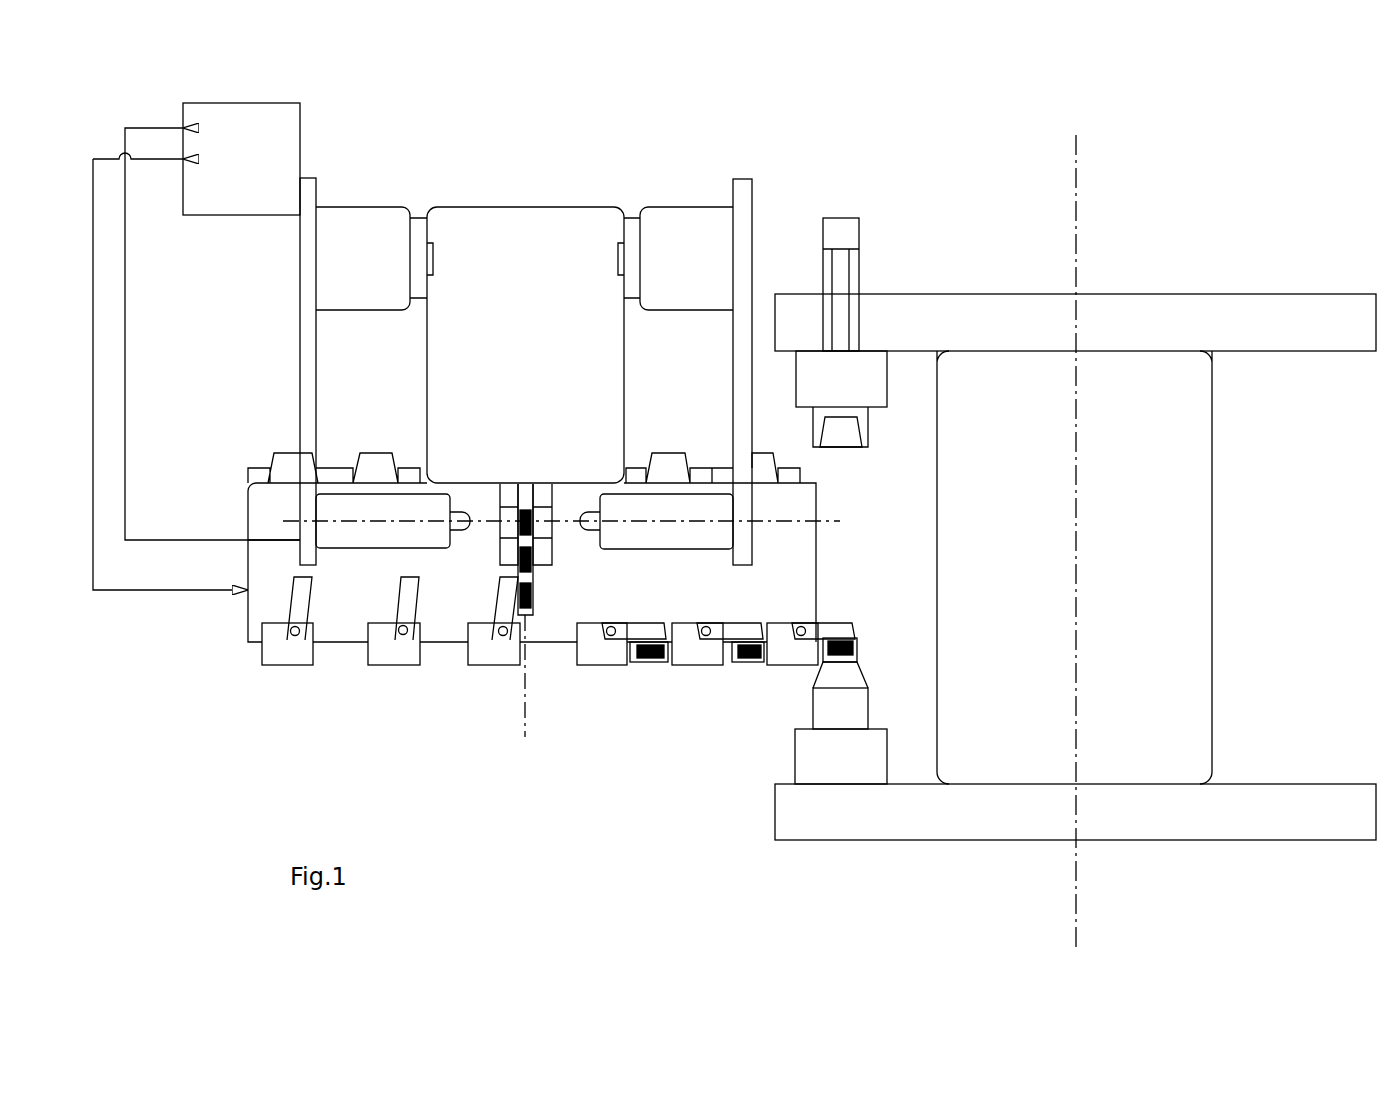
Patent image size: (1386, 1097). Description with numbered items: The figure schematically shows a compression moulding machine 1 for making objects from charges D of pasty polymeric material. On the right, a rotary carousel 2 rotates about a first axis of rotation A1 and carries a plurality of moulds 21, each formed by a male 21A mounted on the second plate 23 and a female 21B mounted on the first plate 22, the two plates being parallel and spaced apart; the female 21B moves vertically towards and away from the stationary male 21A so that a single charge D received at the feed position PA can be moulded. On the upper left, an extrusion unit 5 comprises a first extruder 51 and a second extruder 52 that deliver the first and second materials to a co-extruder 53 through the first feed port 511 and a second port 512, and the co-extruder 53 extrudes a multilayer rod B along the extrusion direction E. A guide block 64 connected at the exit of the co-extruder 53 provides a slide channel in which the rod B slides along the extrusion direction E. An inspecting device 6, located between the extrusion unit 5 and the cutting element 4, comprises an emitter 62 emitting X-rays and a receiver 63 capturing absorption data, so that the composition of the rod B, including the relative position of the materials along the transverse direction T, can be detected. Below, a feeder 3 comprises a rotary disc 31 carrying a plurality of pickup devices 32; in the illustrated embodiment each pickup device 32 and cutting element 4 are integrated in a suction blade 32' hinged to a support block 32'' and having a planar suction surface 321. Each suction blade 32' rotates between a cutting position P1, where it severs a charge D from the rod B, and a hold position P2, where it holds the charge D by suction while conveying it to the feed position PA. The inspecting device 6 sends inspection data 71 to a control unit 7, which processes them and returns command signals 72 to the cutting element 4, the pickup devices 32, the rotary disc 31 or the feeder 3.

The moulding machine 1 is at (1075, 538).
The rotary carousel 2 is at (1075, 504).
The feeder 3 is at (557, 701).
The cutting element 4 is at (497, 600).
The extrusion unit 5 is at (524, 284).
The inspecting device 6 is at (337, 534).
The control unit 7 is at (233, 130).
The mould 21 is at (887, 519).
The first portion (male) 21A is at (843, 758).
The second portion (female) 21B is at (845, 380).
The first plate 22 is at (1330, 318).
The second plate 23 is at (1340, 808).
The rotary disc 31 is at (347, 610).
The pickup device 32 is at (389, 665).
The suction blade 32' is at (640, 716).
The support block 32'' is at (621, 687).
The suction surface 321 is at (412, 595).
The first extruder 51 is at (665, 232).
The first feed port 511 is at (618, 243).
The second guide 512 is at (437, 243).
The second extruder 52 is at (350, 227).
The co-extruder 53 is at (500, 230).
The emitter 62 is at (708, 536).
The receiver 63 is at (333, 510).
The guide block 64 is at (507, 495).
The inspection data 71 is at (135, 127).
The command signals 72 is at (160, 593).
The first axis of rotation A1 is at (1077, 197).
The rod B is at (525, 495).
The charge D is at (748, 655).
The extrusion direction E is at (525, 715).
The cutting position P1 is at (497, 667).
The hold position P2 is at (847, 608).
The feed position PA is at (857, 630).
The transverse direction T is at (770, 521).